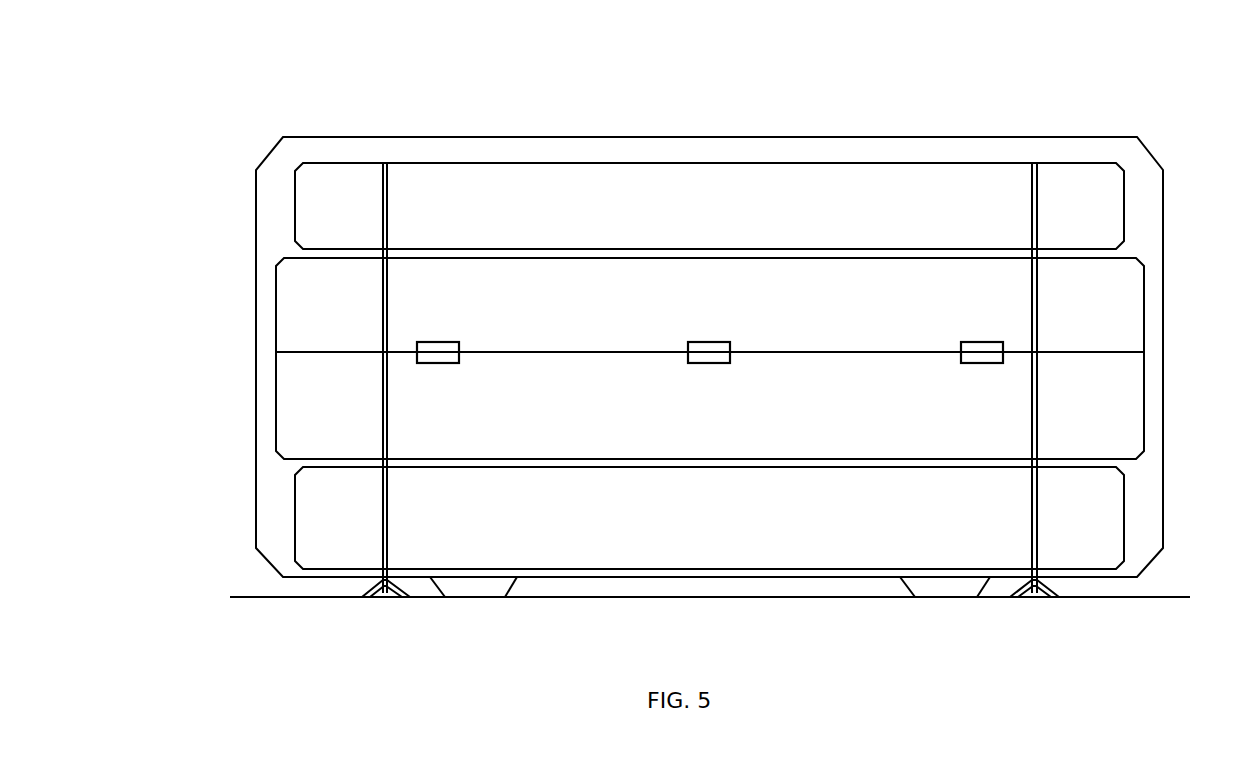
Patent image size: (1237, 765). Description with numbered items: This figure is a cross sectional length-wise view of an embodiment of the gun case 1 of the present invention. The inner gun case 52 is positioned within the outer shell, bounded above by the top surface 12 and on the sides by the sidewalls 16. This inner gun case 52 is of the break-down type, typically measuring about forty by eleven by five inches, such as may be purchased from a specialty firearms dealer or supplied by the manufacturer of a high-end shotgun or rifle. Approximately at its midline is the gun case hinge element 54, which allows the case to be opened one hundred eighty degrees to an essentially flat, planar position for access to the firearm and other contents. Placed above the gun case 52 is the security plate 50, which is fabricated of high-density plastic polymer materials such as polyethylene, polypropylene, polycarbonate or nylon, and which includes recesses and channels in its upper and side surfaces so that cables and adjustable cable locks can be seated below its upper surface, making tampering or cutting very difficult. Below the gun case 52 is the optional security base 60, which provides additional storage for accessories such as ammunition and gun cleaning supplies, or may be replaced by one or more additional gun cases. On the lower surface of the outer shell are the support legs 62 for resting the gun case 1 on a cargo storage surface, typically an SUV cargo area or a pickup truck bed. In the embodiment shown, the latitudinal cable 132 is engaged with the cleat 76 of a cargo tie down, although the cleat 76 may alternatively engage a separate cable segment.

The gun case 1 is at (716, 103).
The top surface 12 is at (543, 137).
The sidewalls 16 is at (255, 318).
The security plate 50 is at (1112, 200).
The gun case 52 is at (1132, 305).
The gun case hinge element 54 is at (1000, 360).
The security base 60 is at (1106, 508).
The support legs 62 is at (480, 592).
The cleat 76 is at (369, 598).
The latitudinal cable 132 is at (1034, 160).